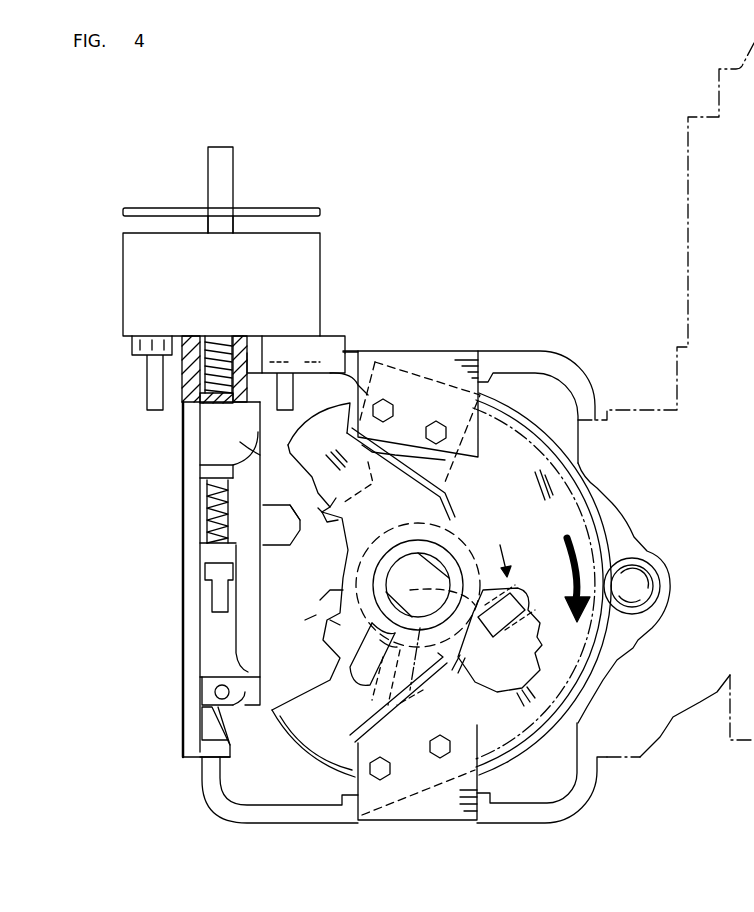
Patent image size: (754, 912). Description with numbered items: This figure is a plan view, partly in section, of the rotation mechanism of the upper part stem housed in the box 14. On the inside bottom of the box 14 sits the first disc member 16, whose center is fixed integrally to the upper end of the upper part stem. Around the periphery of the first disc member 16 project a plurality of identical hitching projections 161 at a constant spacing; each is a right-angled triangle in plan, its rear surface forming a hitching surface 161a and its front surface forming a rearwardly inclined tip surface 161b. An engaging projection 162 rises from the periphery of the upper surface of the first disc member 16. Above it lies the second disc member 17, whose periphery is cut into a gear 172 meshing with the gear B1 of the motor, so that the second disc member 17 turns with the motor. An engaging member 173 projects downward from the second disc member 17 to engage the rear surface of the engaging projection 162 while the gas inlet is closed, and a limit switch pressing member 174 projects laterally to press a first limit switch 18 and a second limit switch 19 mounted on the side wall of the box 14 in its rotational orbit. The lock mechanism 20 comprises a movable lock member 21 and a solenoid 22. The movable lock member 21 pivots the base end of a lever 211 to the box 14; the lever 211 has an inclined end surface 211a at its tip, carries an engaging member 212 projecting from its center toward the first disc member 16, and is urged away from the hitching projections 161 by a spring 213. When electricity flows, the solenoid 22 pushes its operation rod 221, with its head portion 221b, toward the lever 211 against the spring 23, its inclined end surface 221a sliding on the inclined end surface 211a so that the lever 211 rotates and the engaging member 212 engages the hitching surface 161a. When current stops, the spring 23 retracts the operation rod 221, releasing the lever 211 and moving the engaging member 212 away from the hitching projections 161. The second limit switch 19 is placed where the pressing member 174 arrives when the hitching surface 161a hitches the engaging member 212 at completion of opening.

The box 14 is at (318, 823).
The first disc member 16 is at (293, 568).
The hitching projections 161 is at (340, 520).
The hitching surface 161a is at (300, 574).
The inclined tip surface 161b is at (320, 510).
The engaging projection 162 is at (470, 677).
The second disc member 17 is at (520, 728).
The gear 172 is at (600, 544).
The engaging member 173 is at (538, 628).
The limit switch pressing member 174 is at (347, 622).
The first limit switch 18 is at (372, 722).
The second limit switch 19 is at (411, 435).
The lock mechanism 20 is at (127, 490).
The movable lock member 21 is at (270, 455).
The lever 211 is at (245, 620).
The inclined end surface 211a is at (240, 442).
The engaging member 212 is at (282, 540).
The spring 213 is at (228, 721).
The solenoid 22 is at (328, 268).
The operation rod 221 is at (210, 437).
The inclined end surface 221a is at (229, 449).
The head portion 221b is at (248, 420).
The spring 23 is at (212, 518).
The gear of the motor B1 is at (650, 562).